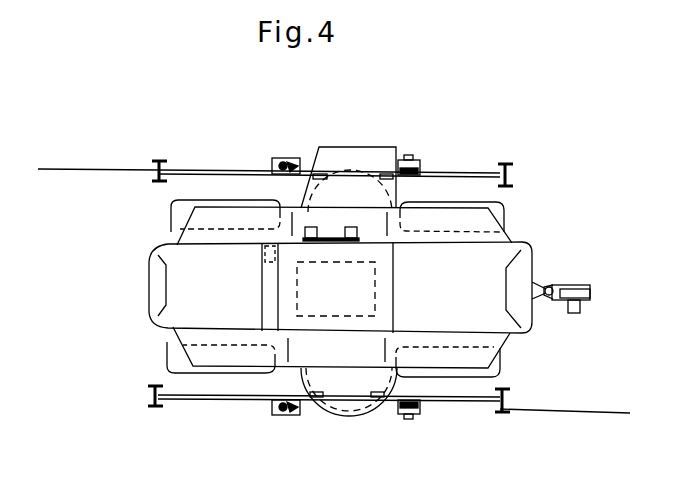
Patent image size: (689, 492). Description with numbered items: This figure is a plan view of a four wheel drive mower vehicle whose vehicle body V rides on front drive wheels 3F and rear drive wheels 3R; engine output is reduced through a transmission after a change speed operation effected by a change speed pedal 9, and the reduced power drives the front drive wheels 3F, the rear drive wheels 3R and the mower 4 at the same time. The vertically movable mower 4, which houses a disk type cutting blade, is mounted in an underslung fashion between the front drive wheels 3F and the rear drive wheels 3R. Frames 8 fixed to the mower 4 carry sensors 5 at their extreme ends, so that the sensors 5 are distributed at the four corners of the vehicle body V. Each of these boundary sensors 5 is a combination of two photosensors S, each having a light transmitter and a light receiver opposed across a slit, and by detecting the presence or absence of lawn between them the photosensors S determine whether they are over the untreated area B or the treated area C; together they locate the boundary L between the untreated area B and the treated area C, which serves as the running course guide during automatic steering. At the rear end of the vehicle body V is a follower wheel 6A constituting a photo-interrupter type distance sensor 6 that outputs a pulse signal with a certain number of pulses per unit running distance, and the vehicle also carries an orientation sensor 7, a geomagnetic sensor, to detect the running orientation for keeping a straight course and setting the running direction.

The front drive wheels 3F is at (242, 200).
The rear drive wheels 3R is at (503, 214).
The mower 4 is at (378, 147).
The sensors 5 is at (166, 149).
The distance sensor 6 is at (586, 312).
The follower wheel 6A is at (591, 291).
The orientation sensor 7 is at (300, 287).
The frames 8 is at (202, 170).
The change speed pedal 9 is at (354, 227).
The vehicle body V is at (496, 283).
The boundary L is at (121, 169).
The photosensors S is at (153, 180).
The untreated area B is at (86, 208).
The treated area C is at (69, 148).